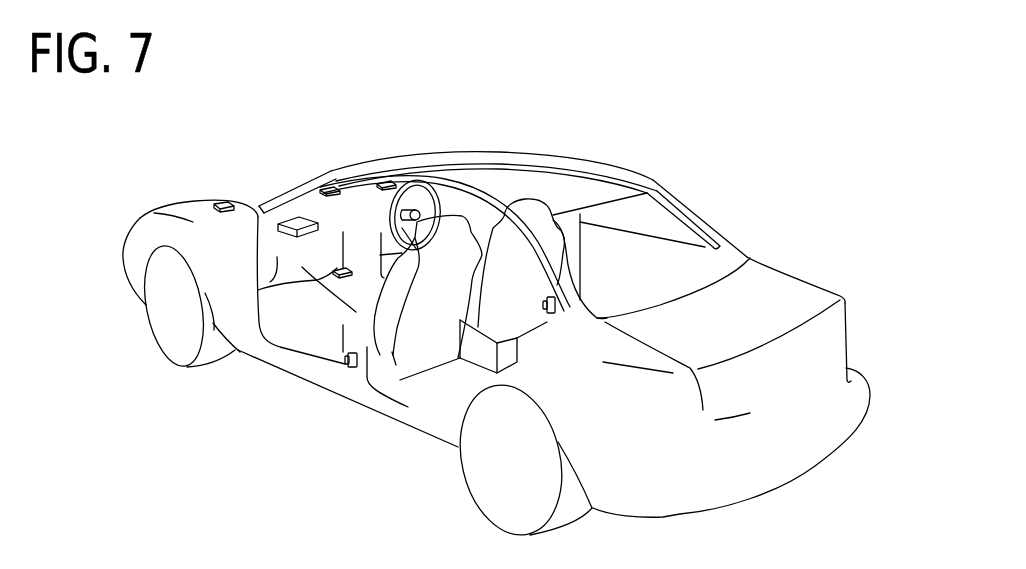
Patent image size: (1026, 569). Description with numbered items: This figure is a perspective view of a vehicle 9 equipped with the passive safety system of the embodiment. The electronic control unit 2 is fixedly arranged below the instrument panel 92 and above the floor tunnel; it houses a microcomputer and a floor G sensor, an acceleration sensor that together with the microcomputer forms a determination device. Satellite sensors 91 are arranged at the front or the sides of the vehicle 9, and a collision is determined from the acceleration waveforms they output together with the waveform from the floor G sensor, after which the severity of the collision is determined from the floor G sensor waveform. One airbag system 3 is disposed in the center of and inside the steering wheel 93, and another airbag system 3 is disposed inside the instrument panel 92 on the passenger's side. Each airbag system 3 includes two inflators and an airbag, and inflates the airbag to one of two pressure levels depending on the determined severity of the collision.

The vehicle 9 is at (713, 127).
The satellite sensor 91 is at (587, 342).
The instrument panel 92 is at (372, 228).
The steering wheel 93 is at (414, 183).
The electronic control unit 2 is at (348, 276).
The airbag system 3 is at (278, 228).